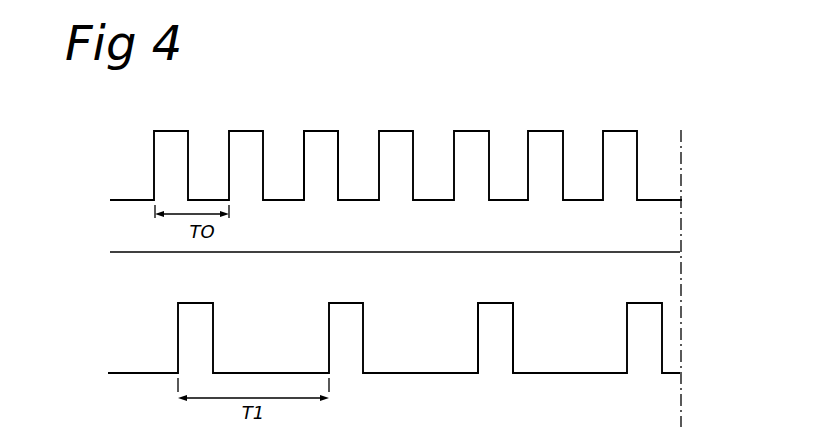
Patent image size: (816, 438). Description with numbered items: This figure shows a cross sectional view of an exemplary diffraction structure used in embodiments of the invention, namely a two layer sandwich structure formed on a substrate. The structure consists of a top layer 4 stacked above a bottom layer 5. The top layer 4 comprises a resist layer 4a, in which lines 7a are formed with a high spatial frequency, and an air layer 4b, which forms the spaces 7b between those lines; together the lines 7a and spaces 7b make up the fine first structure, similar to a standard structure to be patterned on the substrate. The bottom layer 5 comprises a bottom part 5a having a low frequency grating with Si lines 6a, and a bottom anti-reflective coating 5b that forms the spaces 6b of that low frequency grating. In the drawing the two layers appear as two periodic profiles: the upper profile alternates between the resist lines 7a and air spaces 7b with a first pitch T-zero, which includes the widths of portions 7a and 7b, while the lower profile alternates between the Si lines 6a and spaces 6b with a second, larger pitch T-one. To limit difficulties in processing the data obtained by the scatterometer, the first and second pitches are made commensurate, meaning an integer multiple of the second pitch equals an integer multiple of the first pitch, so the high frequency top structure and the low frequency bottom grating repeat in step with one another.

The top layer 4 is at (738, 130).
The resist layer 4a is at (648, 231).
The air layer 4b is at (655, 163).
The bottom layer 5 is at (738, 250).
The bottom part 5a is at (643, 406).
The bottom anti-reflective coating 5b is at (638, 284).
The Si lines 6a is at (500, 333).
The spaces 6b is at (428, 332).
The lines 7a is at (322, 145).
The spaces 7b is at (359, 142).